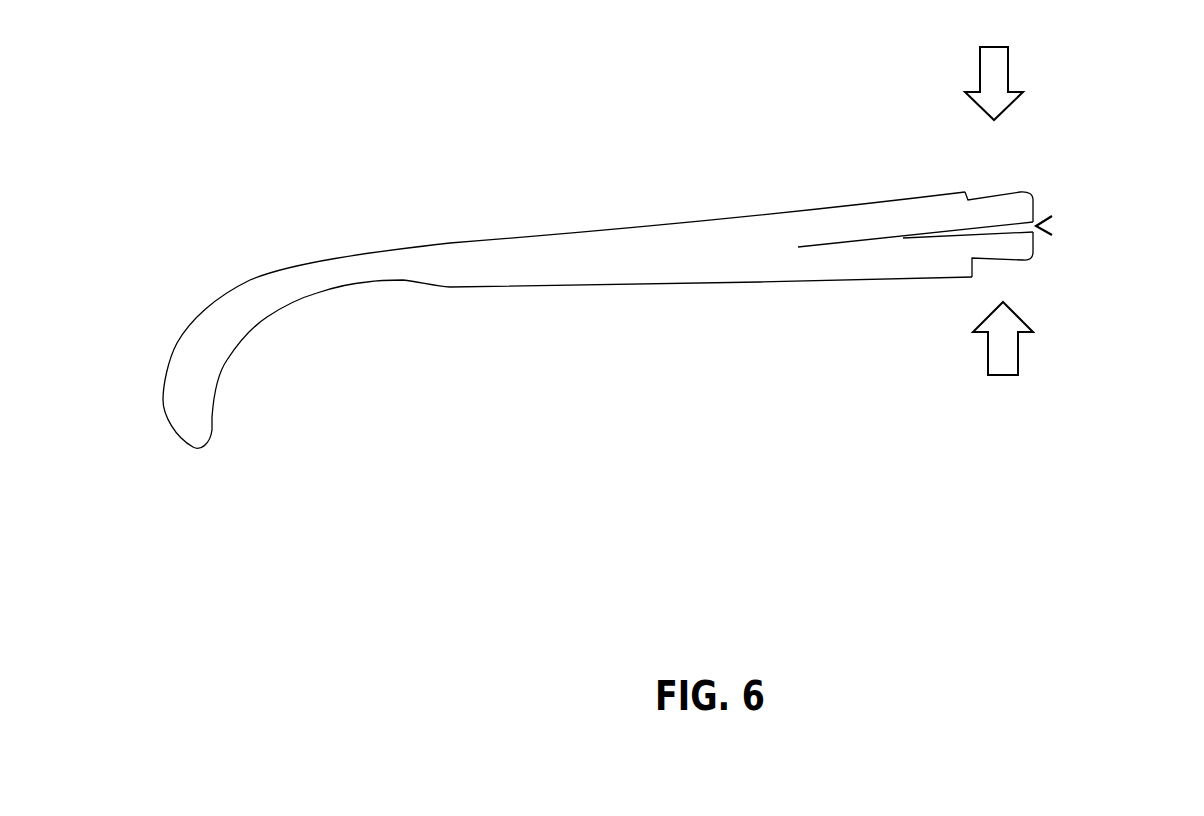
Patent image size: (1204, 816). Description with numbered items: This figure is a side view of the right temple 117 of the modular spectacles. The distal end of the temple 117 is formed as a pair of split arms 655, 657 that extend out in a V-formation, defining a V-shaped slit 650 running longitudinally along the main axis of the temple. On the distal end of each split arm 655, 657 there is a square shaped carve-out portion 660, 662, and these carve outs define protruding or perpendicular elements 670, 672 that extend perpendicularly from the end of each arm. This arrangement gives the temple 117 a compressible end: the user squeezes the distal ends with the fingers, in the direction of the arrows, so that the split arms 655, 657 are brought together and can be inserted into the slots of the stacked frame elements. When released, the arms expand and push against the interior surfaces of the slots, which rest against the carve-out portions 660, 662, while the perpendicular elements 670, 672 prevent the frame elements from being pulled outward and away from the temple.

The temple 117 is at (586, 283).
The V-shaped slit 650 is at (1038, 225).
The split arm 655 is at (880, 208).
The split arm 657 is at (880, 278).
The square shaped carve-out portion 660 is at (988, 196).
The square shaped carve-out portion 662 is at (993, 260).
The protruding element 670 is at (1018, 178).
The protruding element 672 is at (1018, 267).